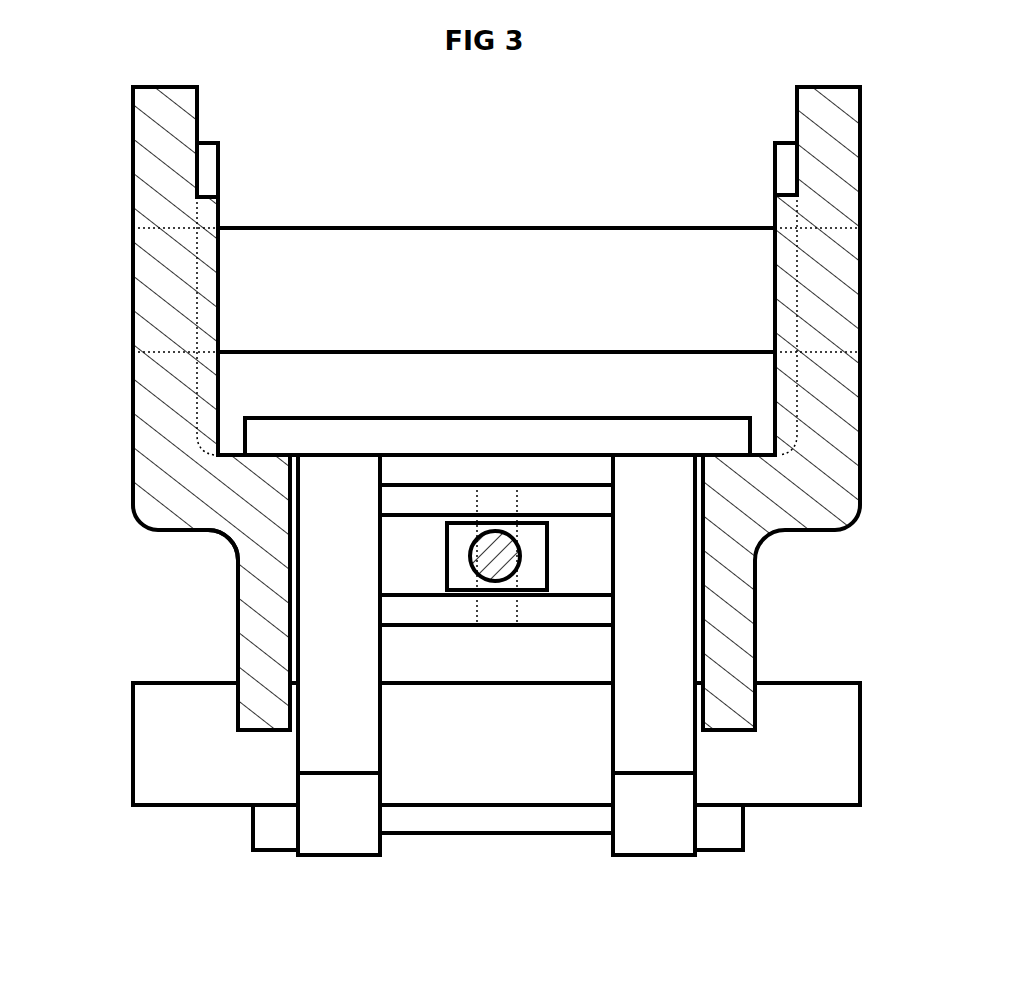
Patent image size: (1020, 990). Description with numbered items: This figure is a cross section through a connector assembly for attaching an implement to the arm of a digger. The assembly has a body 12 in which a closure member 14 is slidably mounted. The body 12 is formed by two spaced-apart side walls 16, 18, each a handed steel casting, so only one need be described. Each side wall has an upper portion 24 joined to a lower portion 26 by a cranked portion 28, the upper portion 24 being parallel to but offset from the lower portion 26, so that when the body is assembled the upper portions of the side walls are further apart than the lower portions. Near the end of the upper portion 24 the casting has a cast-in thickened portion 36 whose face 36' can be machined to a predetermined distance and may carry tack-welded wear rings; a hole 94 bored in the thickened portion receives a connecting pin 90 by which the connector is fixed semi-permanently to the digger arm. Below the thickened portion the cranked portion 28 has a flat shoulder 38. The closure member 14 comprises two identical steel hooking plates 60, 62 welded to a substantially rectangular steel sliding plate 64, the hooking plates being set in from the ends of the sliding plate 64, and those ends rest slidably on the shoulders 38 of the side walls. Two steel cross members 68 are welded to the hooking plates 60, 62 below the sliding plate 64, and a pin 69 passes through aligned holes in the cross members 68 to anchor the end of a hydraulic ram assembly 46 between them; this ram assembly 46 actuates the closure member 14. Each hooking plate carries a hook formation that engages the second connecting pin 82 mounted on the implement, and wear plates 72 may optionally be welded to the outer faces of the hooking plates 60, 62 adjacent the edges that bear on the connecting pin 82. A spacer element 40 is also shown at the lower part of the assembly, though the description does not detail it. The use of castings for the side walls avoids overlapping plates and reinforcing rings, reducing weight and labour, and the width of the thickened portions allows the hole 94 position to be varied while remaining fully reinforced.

The body 12 is at (862, 186).
The closure member 14 is at (550, 418).
The side wall 16 is at (165, 86).
The side wall 18 is at (827, 84).
The upper portion 24 is at (133, 170).
The lower portion 26 is at (238, 630).
The cranked portion 28 is at (178, 531).
The thickened portion 36 is at (271, 147).
The machined face 36' is at (496, 324).
The shoulder 38 is at (278, 450).
The spacer block 40 is at (267, 830).
The hydraulic ram assembly 46 is at (530, 548).
The hooking plate 60 is at (342, 838).
The hooking plate 62 is at (660, 838).
The sliding plate 64 is at (258, 418).
The cross member 68 is at (410, 497).
The pin 69 is at (513, 600).
The wear plate 72 is at (503, 820).
The connecting pin 82 is at (840, 750).
The connecting pin 90 is at (436, 228).
The hole 94 is at (180, 231).